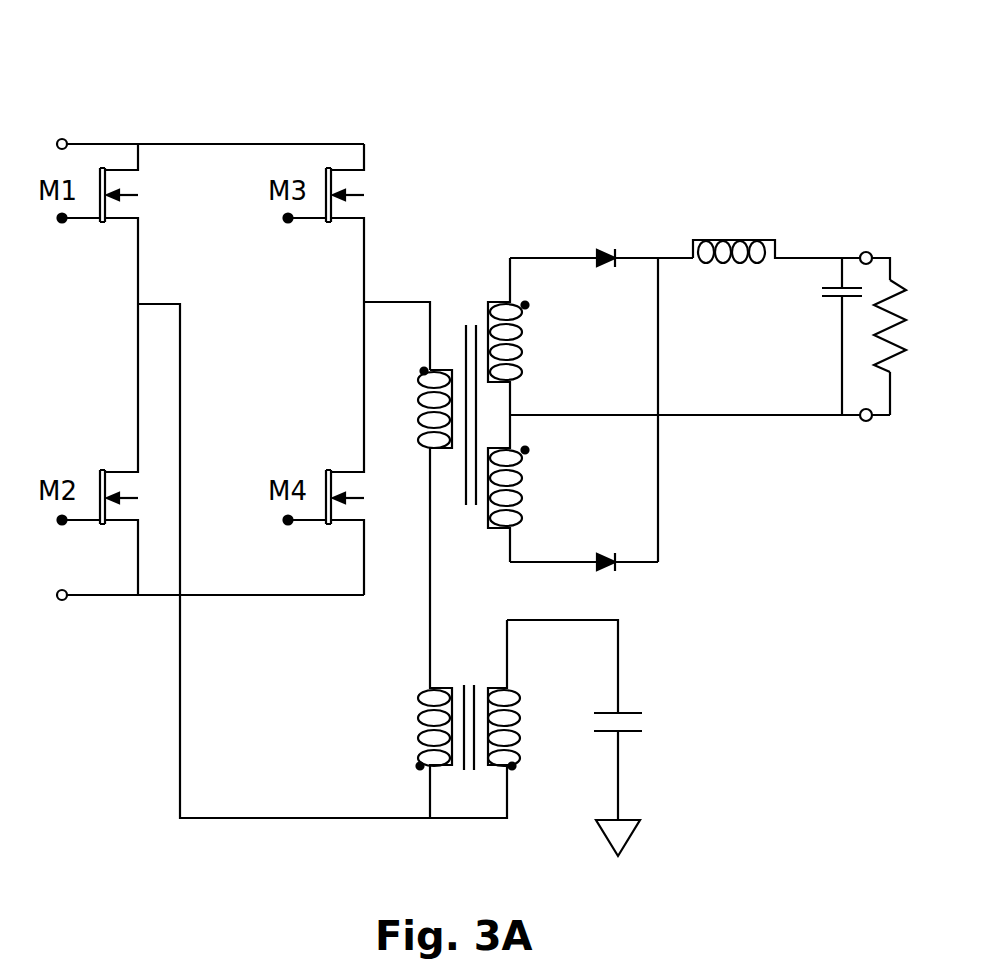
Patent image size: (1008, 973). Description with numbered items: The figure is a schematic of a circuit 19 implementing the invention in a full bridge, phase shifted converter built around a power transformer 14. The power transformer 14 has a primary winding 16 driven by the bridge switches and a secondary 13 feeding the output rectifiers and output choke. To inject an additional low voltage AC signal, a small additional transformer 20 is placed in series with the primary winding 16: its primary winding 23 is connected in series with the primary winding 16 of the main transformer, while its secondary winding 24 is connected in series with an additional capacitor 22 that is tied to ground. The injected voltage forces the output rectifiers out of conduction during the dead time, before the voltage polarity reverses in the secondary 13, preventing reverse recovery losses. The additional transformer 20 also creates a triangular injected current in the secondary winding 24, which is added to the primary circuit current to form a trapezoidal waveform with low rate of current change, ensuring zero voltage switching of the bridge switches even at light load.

The secondary 13 is at (545, 440).
The power transformer 14 is at (470, 262).
The primary winding 16 is at (420, 446).
The circuit 19 is at (580, 98).
The additional transformer 20 is at (480, 649).
The additional capacitor 22 is at (642, 710).
The primary winding 23 is at (418, 693).
The secondary winding 24 is at (522, 712).